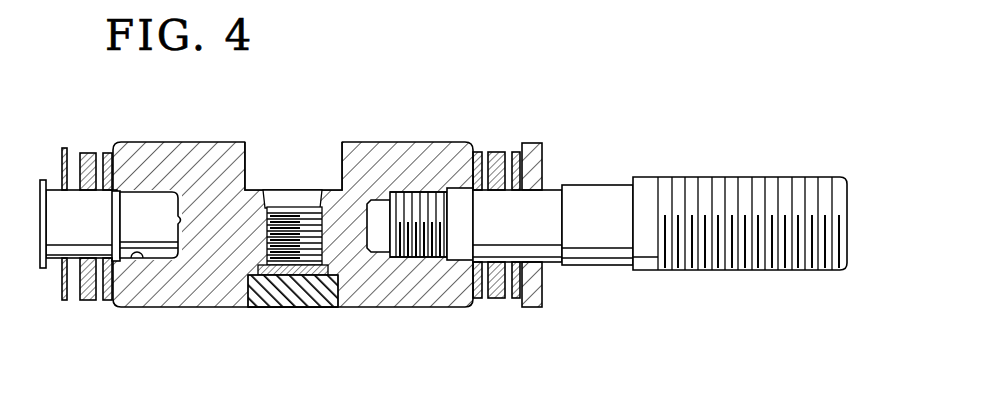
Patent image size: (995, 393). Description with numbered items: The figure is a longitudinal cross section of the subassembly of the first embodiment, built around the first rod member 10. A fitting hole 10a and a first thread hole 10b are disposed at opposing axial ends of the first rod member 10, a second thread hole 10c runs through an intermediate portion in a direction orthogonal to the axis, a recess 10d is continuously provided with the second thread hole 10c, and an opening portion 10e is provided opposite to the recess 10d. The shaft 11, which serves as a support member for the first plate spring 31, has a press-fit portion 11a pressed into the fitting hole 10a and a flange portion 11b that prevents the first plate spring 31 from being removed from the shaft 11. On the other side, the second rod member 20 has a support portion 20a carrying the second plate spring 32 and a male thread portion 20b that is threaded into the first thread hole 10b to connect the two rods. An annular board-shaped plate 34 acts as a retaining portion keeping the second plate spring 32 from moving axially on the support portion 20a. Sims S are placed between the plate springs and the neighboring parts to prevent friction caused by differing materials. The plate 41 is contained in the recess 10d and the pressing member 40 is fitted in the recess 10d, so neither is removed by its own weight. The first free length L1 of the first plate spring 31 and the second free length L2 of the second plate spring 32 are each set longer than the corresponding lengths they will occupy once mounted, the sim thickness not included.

The first rod member 10 is at (216, 141).
The fitting hole 10a is at (134, 258).
The first thread hole 10b is at (407, 200).
The second thread hole 10c is at (312, 240).
The recess 10d is at (330, 303).
The opening portion 10e is at (342, 158).
The shaft 11 is at (109, 218).
The press-fit portion 11a is at (152, 236).
The flange portion 11b is at (44, 270).
The second rod member 20 is at (607, 242).
The support portion 20a is at (550, 242).
The male thread portion 20b is at (414, 258).
The first plate spring 31 is at (95, 301).
The second plate spring 32 is at (492, 299).
The plate 34 is at (530, 308).
The pressing member 40 is at (290, 308).
The plate 41 is at (250, 306).
The sim S is at (63, 148).
The first free length L1 is at (112, 150).
The second free length L2 is at (518, 150).